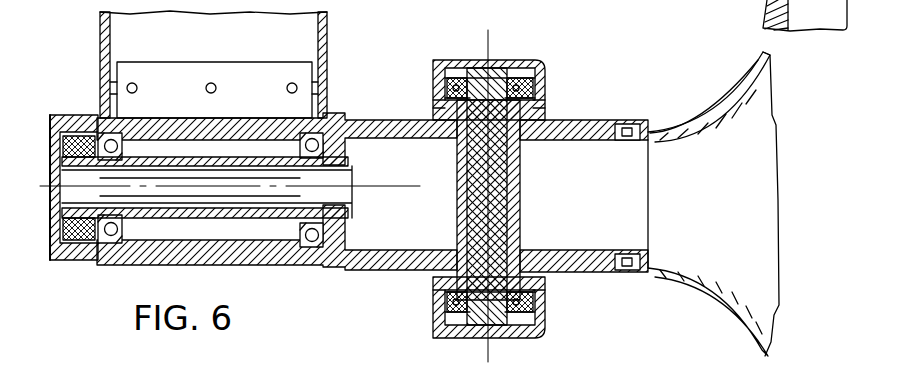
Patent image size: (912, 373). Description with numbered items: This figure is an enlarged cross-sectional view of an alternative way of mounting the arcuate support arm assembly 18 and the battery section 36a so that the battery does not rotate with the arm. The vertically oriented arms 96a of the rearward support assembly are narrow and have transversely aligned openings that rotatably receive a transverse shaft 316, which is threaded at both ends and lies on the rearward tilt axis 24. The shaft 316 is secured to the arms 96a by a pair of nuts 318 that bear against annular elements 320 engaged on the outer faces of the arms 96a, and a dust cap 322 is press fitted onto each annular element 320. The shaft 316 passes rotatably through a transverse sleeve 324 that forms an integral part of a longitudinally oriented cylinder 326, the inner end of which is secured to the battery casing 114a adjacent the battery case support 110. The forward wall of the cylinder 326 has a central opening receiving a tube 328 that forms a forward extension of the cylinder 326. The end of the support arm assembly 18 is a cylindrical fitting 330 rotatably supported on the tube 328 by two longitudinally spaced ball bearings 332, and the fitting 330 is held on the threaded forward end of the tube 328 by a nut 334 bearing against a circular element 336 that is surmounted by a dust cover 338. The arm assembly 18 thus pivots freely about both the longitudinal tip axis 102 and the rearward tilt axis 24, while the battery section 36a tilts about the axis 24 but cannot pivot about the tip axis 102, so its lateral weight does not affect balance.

The support arm assembly 18 is at (330, 33).
The rearward tilt axis 24 is at (490, 33).
The battery section 36a is at (727, 209).
The arms 96a is at (540, 109).
The tip axis 102 is at (362, 193).
The battery case support 110 is at (765, 12).
The battery casing 114a is at (688, 124).
The transverse shaft 316 is at (500, 200).
The nuts 318 is at (515, 84).
The annular elements 320 is at (535, 88).
The dust cap 322 is at (438, 60).
The transverse sleeve 324 is at (460, 173).
The cylinder 326 is at (378, 120).
The tube 328 is at (343, 213).
The cylindrical fitting 330 is at (258, 266).
The ball bearings 332 is at (112, 263).
The nut 334 is at (58, 262).
The circular element 336 is at (86, 134).
The dust cover 338 is at (53, 115).